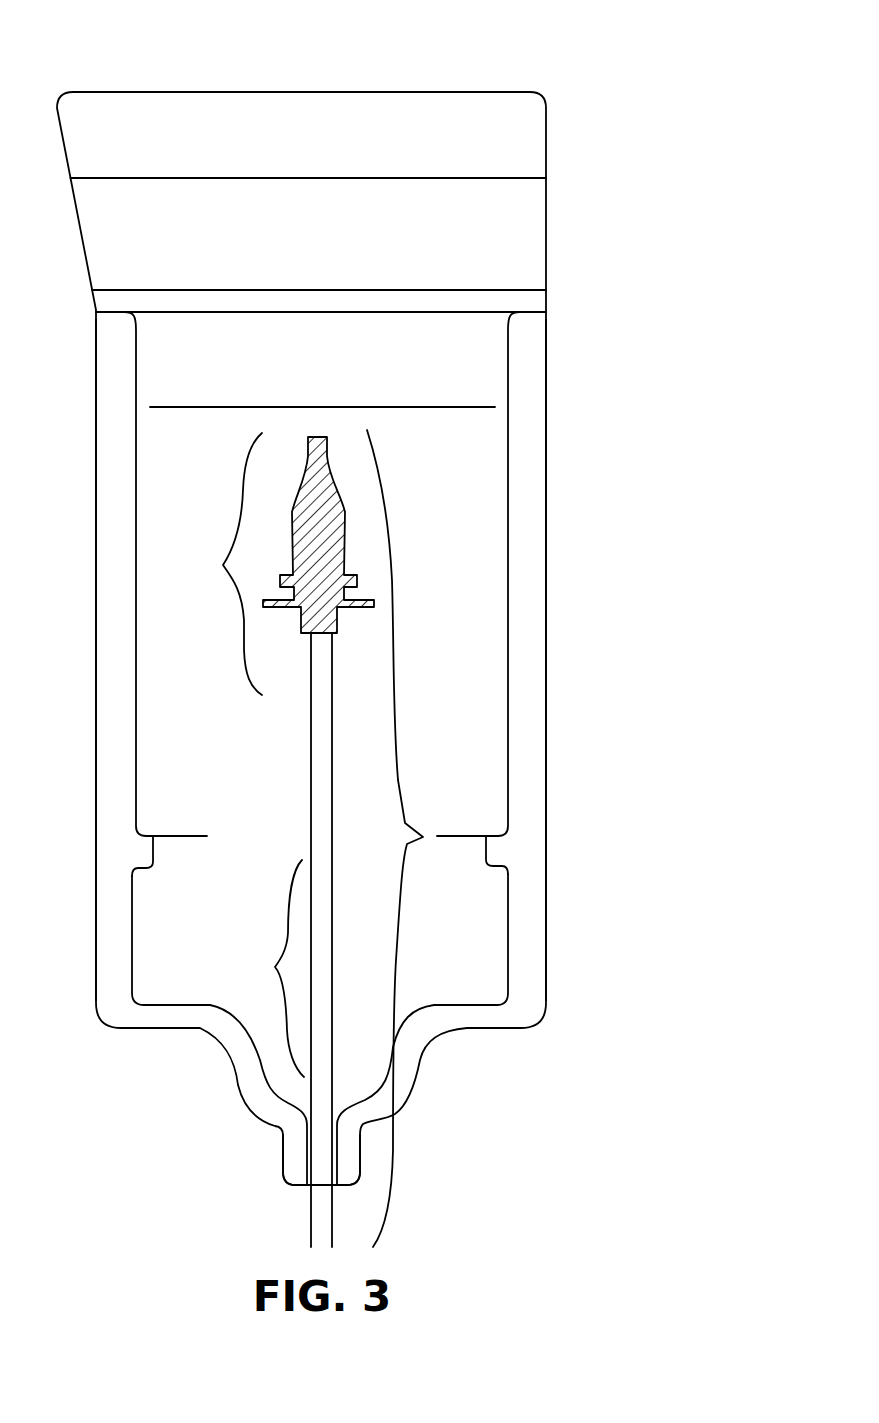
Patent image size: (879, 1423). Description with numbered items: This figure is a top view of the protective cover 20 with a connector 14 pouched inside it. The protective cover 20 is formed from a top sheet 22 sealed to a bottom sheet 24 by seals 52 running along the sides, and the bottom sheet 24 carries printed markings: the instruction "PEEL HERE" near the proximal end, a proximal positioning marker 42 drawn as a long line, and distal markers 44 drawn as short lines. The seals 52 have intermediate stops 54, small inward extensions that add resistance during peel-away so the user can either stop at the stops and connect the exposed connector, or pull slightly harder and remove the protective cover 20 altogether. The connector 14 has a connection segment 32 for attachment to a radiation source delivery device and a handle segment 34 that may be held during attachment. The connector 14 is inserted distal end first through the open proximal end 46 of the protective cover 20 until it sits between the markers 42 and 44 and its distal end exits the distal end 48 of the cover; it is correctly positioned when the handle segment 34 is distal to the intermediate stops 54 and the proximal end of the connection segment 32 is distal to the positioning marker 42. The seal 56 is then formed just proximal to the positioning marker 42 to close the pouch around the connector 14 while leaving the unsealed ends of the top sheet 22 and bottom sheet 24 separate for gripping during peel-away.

The protective cover 20 is at (578, 35).
The bottom sheet 24 is at (498, 128).
The top sheet 22 is at (500, 202).
The seal 56 is at (527, 297).
The proximal positioning marker 42 is at (470, 407).
The seals 52 is at (120, 580).
The distal markers 44 is at (187, 837).
The intermediate stops 54 is at (137, 850).
The connector 14 is at (425, 840).
The connection segment 32 is at (223, 565).
The handle segment 34 is at (276, 967).
The proximal end 46 is at (318, 68).
The distal end 48 is at (281, 1200).